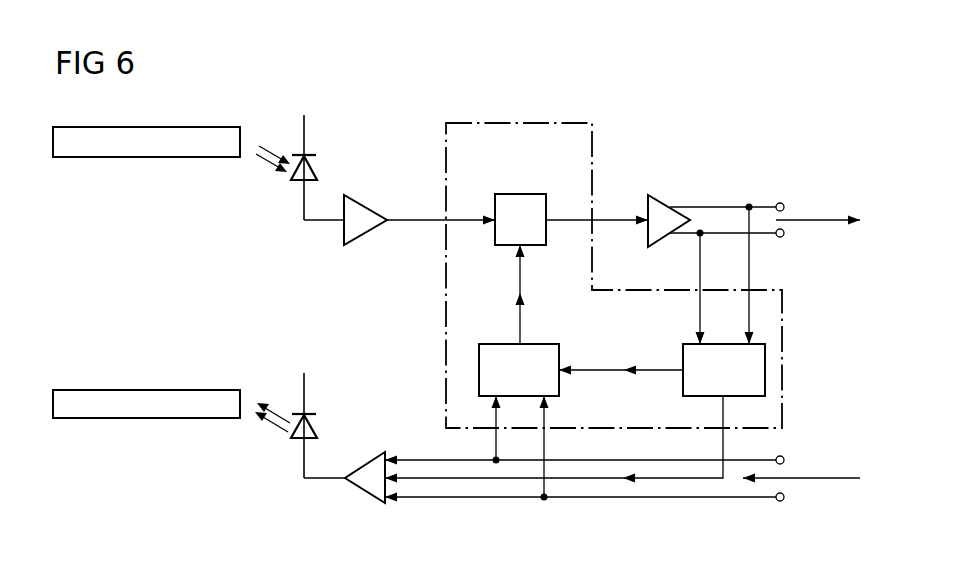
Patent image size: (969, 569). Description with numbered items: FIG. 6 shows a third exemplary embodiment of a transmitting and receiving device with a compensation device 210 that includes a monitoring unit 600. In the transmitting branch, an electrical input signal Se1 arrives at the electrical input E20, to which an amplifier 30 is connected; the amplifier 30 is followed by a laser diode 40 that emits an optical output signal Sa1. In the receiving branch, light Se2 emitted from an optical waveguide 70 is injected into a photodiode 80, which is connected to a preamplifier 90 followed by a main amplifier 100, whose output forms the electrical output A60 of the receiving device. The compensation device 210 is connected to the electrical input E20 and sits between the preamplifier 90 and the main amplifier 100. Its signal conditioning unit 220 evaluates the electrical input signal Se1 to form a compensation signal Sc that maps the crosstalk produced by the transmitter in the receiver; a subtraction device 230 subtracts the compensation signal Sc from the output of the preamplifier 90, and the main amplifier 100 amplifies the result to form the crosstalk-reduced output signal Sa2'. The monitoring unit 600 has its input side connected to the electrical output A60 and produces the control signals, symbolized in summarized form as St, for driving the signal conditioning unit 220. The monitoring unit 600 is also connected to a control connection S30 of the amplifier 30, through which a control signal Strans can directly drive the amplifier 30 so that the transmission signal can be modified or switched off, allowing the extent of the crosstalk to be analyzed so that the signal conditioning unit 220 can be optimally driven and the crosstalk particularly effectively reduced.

The optical waveguide 70 is at (147, 158).
The photodiode 80 is at (318, 158).
The preamplifier 90 is at (368, 201).
The compensation device 210 is at (518, 123).
The subtraction device 230 is at (521, 194).
The main amplifier 100 is at (661, 200).
The signal conditioning unit 220 is at (541, 344).
The monitoring unit 600 is at (765, 370).
The amplifier 30 is at (366, 494).
The laser diode 40 is at (318, 420).
The light Se2 is at (266, 164).
The output signal whose crosstalk has been reduced Sa2' is at (818, 192).
The electrical output A60 is at (800, 234).
The compensation signal Sc is at (506, 294).
The control signal St is at (621, 354).
The electrical input signal Se1 is at (822, 478).
The electrical input E20 is at (798, 489).
The control signal Strans is at (683, 480).
The control connection S30 is at (390, 481).
The optical output signal Sa1 is at (274, 427).